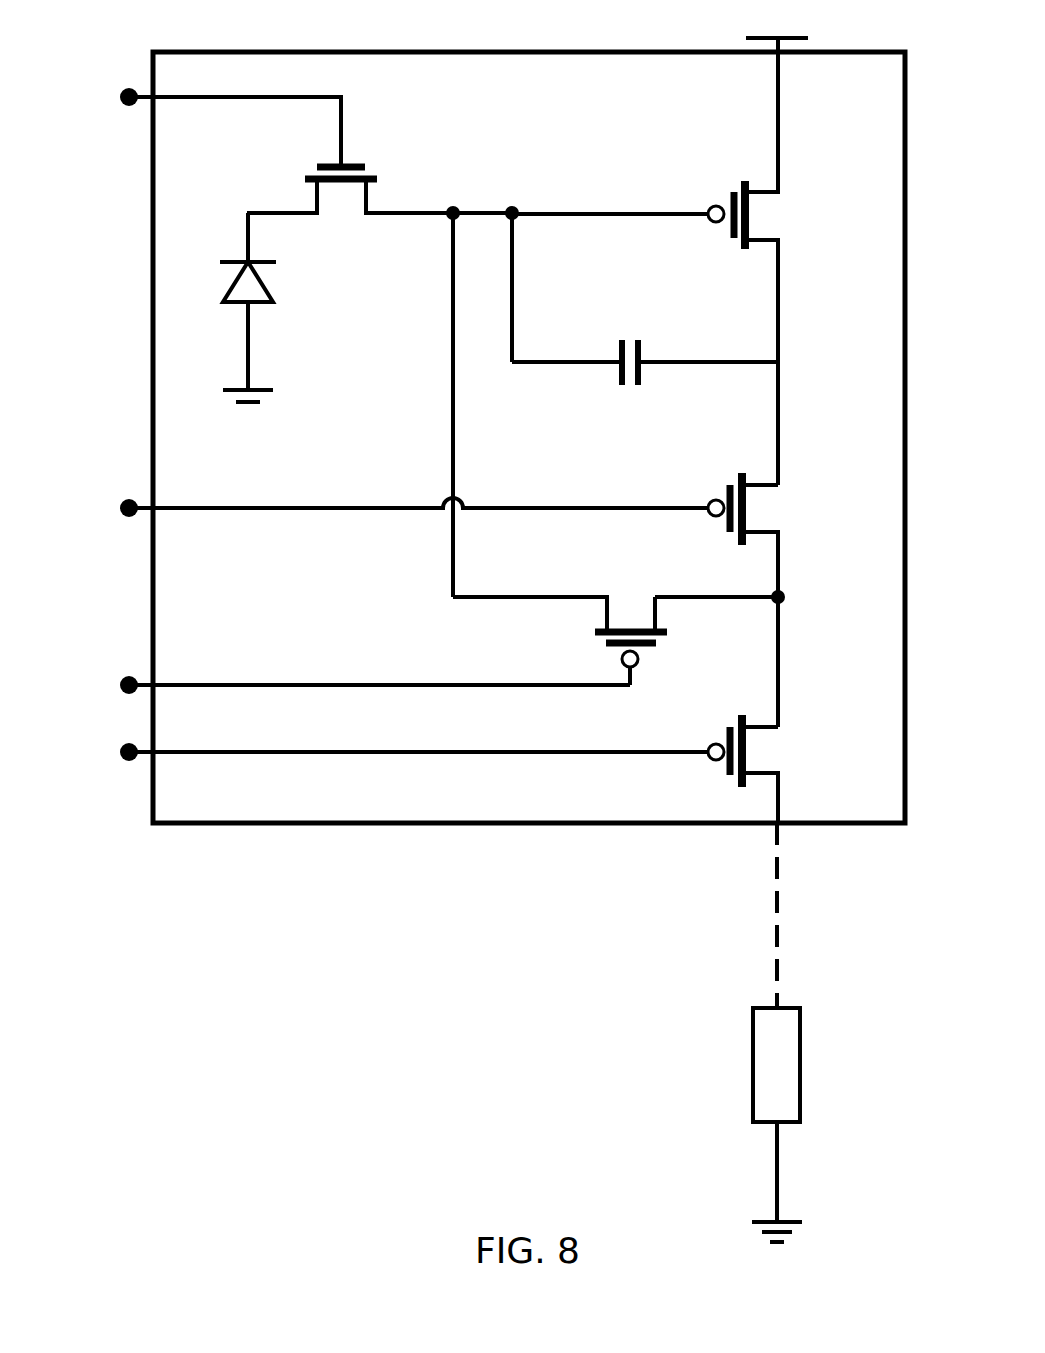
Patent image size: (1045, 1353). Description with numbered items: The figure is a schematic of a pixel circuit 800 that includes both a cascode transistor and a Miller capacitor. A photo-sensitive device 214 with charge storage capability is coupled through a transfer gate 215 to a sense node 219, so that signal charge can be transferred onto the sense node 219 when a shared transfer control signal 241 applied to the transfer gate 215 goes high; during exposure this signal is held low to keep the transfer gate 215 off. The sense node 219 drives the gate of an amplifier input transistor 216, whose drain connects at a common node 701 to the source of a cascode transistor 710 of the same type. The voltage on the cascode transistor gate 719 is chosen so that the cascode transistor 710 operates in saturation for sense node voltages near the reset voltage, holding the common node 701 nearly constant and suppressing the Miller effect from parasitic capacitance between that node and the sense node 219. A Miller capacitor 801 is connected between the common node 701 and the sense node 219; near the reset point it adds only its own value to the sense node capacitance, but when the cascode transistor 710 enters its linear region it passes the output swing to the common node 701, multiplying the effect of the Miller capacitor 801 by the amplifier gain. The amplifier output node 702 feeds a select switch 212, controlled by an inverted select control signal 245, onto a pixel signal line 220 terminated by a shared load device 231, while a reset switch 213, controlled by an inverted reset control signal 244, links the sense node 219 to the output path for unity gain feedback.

The pixel circuit 800 is at (529, 437).
The transfer control signal 241 is at (192, 124).
The transfer gate 215 is at (350, 210).
The photo-sensitive device 214 is at (280, 307).
The sense node 219 is at (473, 384).
The amplifier input transistor 216 is at (681, 200).
The Miller capacitor 801 is at (645, 341).
The common node 701 is at (801, 409).
The cascode transistor gate 719 is at (379, 509).
The cascode transistor 710 is at (777, 535).
The output node 702 is at (742, 658).
The reset switch 213 is at (560, 620).
The inverted reset control signal 244 is at (340, 686).
The inverted select control signal 245 is at (379, 753).
The select switch 212 is at (780, 769).
The pixel signal line 220 is at (743, 915).
The load device 231 is at (737, 1125).